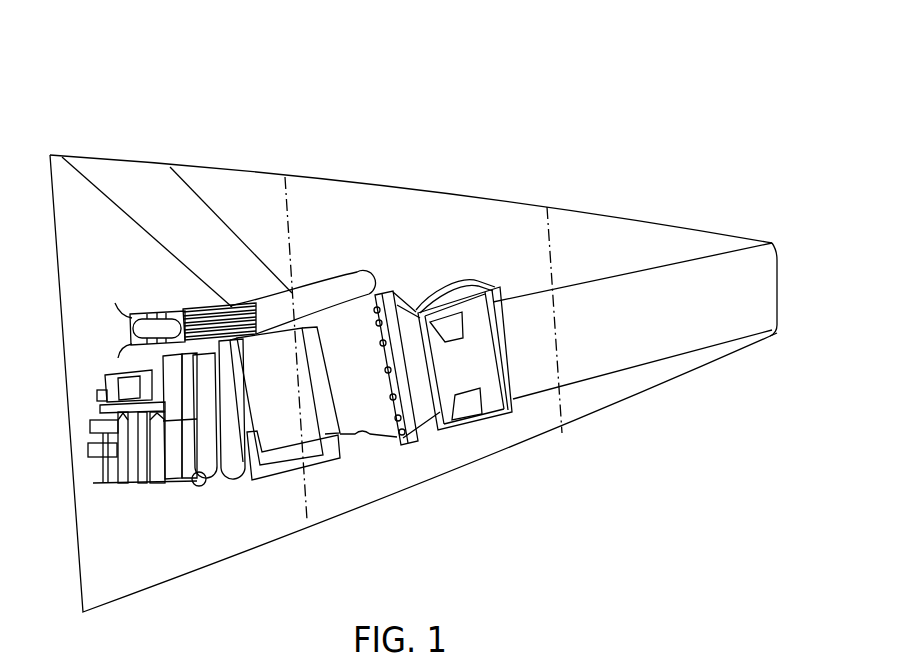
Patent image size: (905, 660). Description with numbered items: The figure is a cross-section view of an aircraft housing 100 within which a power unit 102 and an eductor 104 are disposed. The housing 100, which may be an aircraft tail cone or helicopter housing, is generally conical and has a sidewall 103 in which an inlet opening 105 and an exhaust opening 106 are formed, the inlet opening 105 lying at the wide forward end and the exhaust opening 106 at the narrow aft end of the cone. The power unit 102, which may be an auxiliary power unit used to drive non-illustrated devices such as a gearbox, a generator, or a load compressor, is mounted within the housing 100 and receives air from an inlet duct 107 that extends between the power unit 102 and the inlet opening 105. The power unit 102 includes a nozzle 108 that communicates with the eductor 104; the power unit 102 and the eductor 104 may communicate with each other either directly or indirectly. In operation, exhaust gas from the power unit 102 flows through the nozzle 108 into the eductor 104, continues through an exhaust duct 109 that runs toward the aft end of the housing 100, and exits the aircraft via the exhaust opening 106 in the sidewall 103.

The housing 100 is at (517, 95).
The power unit 102 is at (276, 497).
The sidewall 103 is at (407, 189).
The eductor 104 is at (474, 437).
The inlet opening 105 is at (107, 157).
The exhaust opening 106 is at (777, 290).
The inlet duct 107 is at (211, 208).
The nozzle 108 is at (443, 357).
The exhaust duct 109 is at (614, 276).